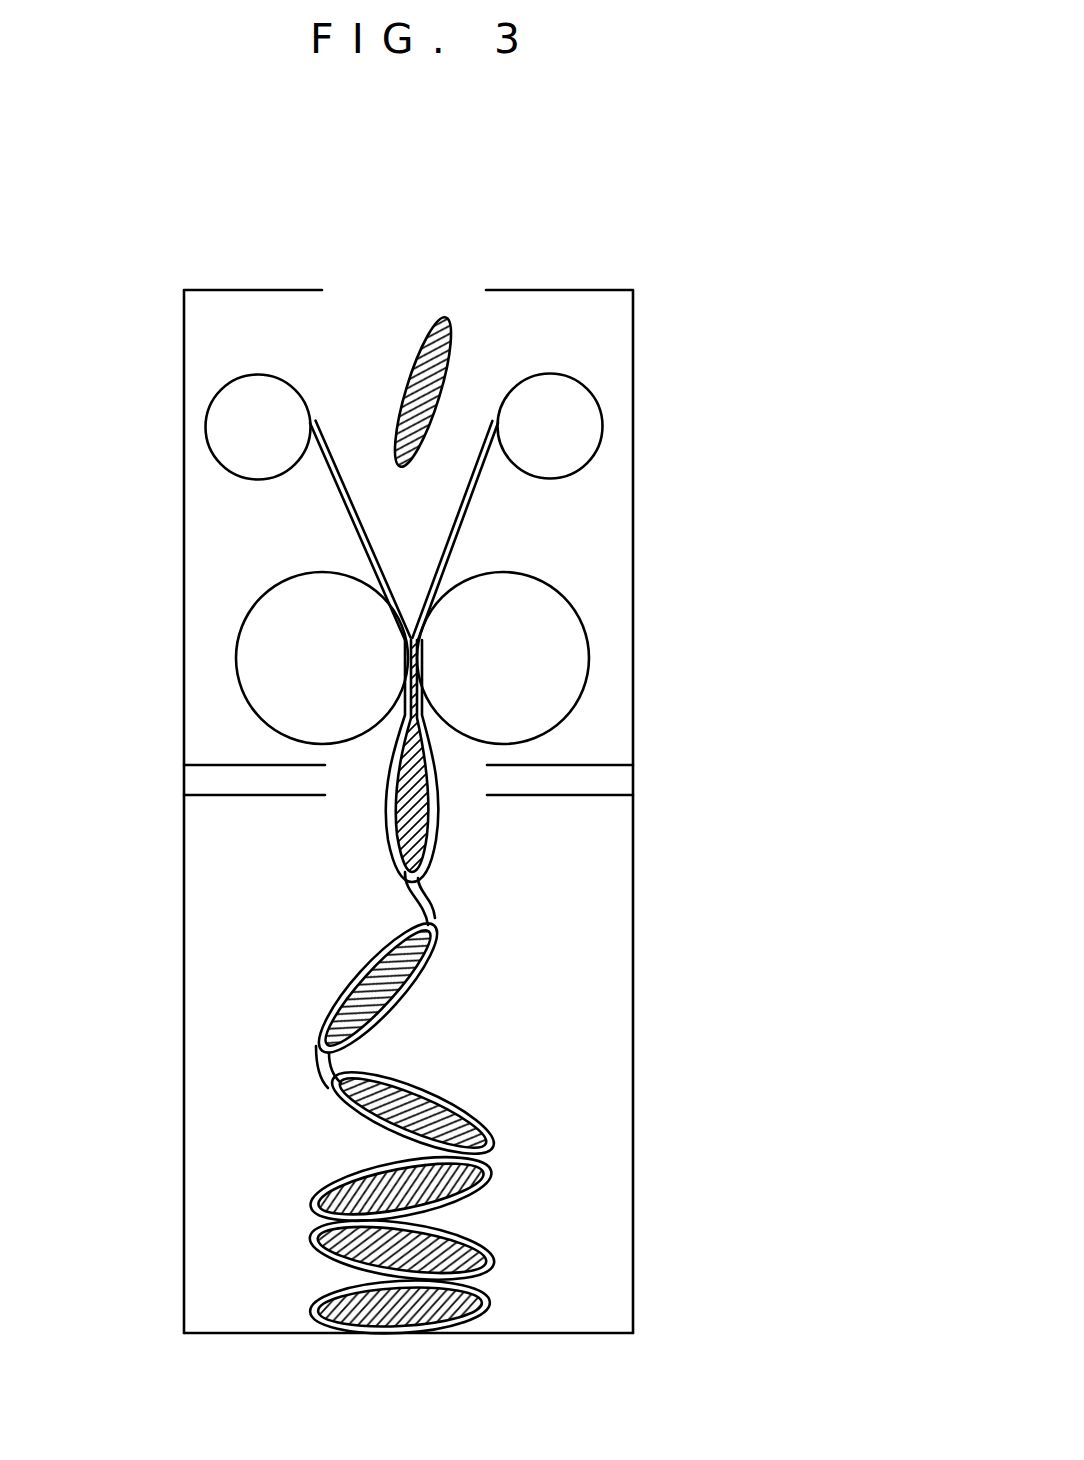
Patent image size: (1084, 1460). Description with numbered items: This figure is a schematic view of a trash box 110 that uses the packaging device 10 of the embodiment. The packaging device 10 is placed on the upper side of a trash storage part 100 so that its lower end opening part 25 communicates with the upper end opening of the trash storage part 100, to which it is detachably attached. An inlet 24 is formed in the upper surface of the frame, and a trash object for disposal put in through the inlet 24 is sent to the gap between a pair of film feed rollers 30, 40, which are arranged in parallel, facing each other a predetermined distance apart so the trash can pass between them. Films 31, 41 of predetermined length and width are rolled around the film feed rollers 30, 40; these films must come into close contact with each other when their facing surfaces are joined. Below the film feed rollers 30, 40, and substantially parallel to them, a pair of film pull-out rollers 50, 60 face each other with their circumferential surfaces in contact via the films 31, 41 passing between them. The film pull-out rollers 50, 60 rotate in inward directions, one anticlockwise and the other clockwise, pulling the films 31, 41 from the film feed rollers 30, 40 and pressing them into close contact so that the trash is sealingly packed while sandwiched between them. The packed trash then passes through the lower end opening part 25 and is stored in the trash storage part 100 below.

The packaging device 10 is at (682, 388).
The inlet 24 is at (389, 285).
The lower end opening part 25 is at (344, 769).
The film feed roller 30 is at (585, 425).
The film 31 is at (472, 513).
The film feed roller 40 is at (222, 424).
The film 41 is at (338, 510).
The film pull-out roller 50 is at (575, 657).
The film pull-out roller 60 is at (248, 633).
The trash storage part 100 is at (633, 1215).
The trash box 110 is at (338, 808).